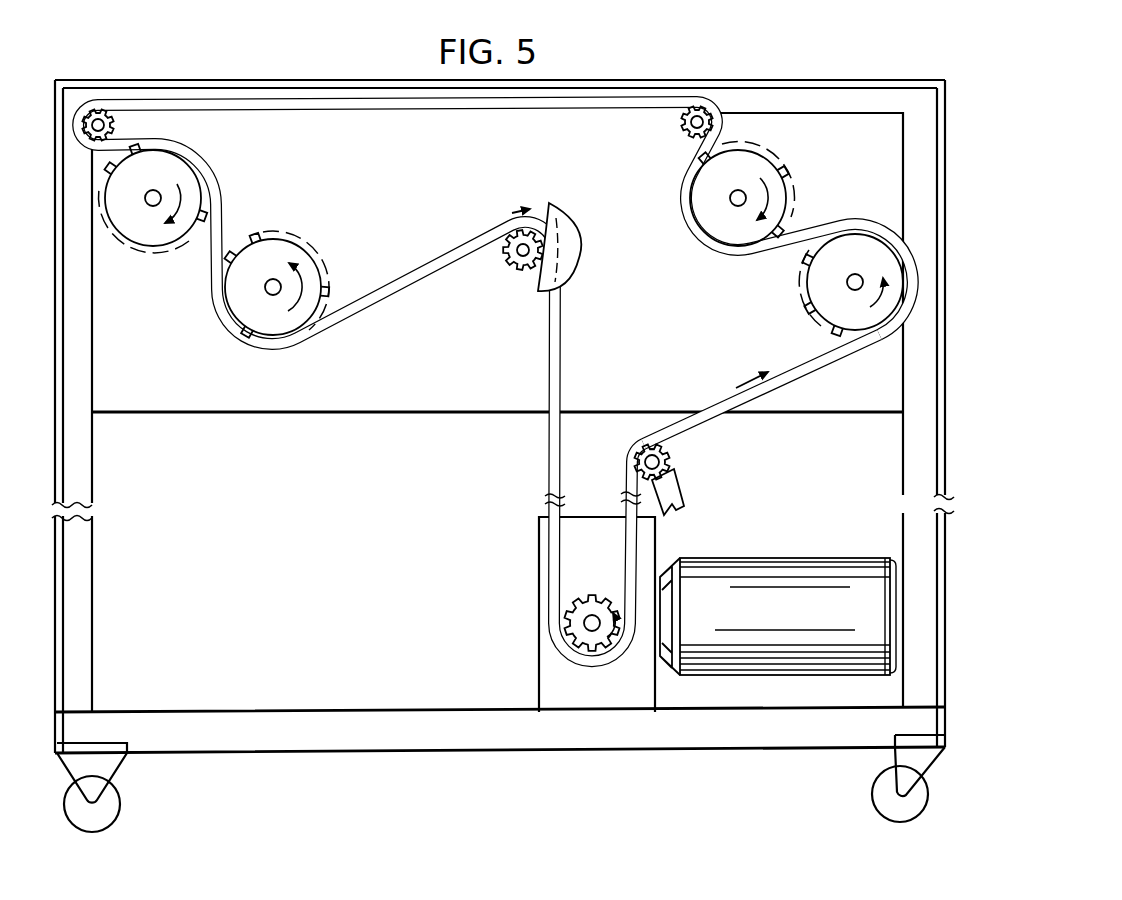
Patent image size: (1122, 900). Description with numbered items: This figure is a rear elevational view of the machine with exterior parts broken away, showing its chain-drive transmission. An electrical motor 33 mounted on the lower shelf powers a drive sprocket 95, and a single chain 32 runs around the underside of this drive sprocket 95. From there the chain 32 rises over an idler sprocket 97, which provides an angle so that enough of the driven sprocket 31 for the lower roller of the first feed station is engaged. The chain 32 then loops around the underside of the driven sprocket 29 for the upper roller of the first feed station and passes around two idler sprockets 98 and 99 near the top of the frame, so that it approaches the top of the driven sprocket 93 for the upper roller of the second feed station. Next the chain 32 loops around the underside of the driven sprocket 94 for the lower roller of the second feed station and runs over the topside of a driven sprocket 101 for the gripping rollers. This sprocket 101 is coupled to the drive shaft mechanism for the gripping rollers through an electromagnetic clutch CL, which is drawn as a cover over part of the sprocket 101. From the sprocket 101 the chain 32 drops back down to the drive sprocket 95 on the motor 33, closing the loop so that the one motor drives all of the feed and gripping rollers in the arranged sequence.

The driven sprocket 29 is at (742, 184).
The driven sprocket 31 is at (862, 266).
The chain 32 is at (781, 393).
The electrical motor 33 is at (772, 558).
The driven sprocket 93 is at (148, 186).
The driven sprocket 94 is at (258, 300).
The drive sprocket 95 is at (574, 626).
The idler sprocket 97 is at (672, 462).
The idler sprocket 98 is at (683, 126).
The idler sprocket 99 is at (168, 136).
The driven sprocket 101 is at (514, 250).
The electromagnetic clutch CL is at (580, 244).